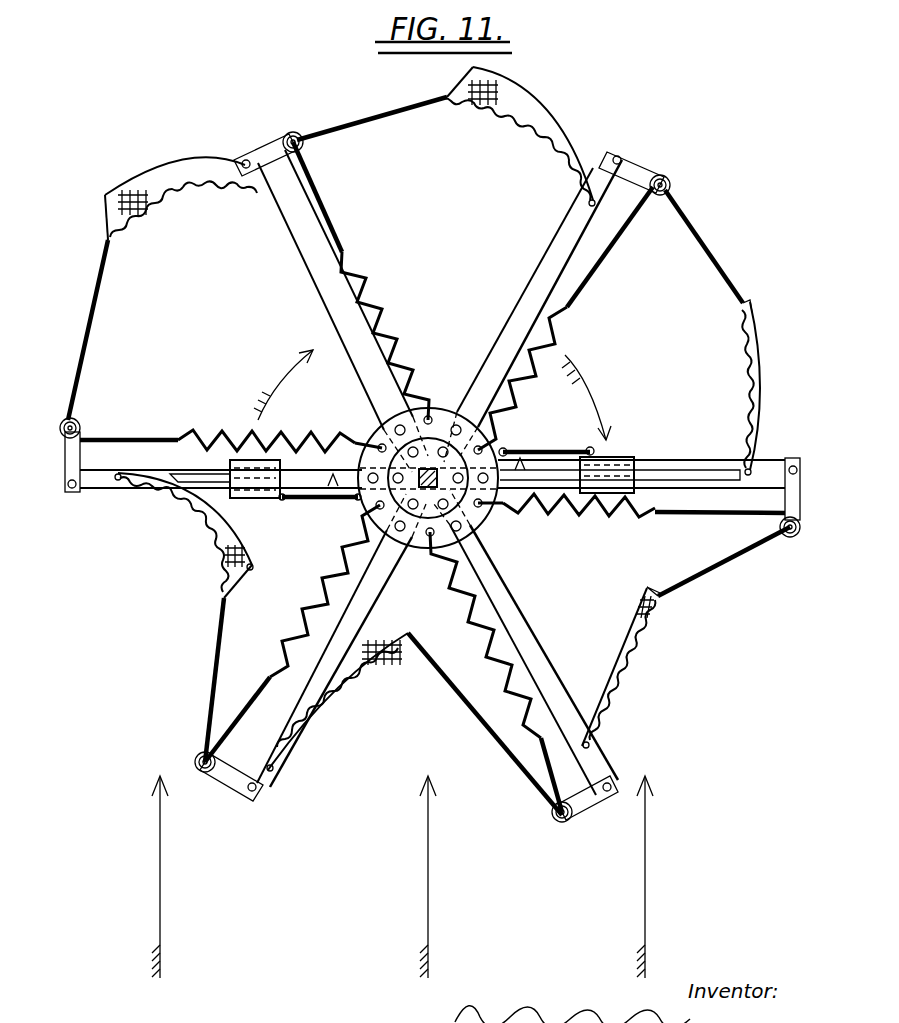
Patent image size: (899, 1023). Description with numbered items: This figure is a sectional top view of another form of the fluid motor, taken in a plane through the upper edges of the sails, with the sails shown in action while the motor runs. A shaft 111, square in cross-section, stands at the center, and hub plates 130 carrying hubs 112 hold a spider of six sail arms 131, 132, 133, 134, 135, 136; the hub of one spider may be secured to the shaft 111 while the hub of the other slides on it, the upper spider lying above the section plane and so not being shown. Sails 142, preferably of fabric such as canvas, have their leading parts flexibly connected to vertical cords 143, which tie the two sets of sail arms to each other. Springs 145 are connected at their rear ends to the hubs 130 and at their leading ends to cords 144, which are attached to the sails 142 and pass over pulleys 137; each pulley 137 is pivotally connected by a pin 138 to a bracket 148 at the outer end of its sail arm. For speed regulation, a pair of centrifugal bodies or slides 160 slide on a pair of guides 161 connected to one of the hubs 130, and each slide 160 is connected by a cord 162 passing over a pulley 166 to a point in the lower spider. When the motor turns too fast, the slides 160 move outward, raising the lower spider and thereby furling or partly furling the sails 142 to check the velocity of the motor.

The shaft 111 is at (393, 548).
The hub 112 is at (507, 449).
The hub plate 130 is at (482, 528).
The sail arm 131 is at (272, 774).
The sail arm 132 is at (526, 612).
The sail arm 133 is at (770, 462).
The sail arm 134 is at (570, 240).
The sail arm 135 is at (314, 288).
The sail arm 136 is at (213, 462).
The pulley 137 is at (306, 150).
The pin 138 is at (302, 164).
The sail 142 is at (142, 222).
The vertical cord 143 is at (112, 484).
The cord 144 is at (338, 128).
The spring 145 is at (380, 290).
The bracket 148 is at (272, 152).
The centrifugal body 160 is at (250, 500).
The guide 161 is at (224, 476).
The cord 162 is at (340, 500).
The pulley 166 is at (588, 447).